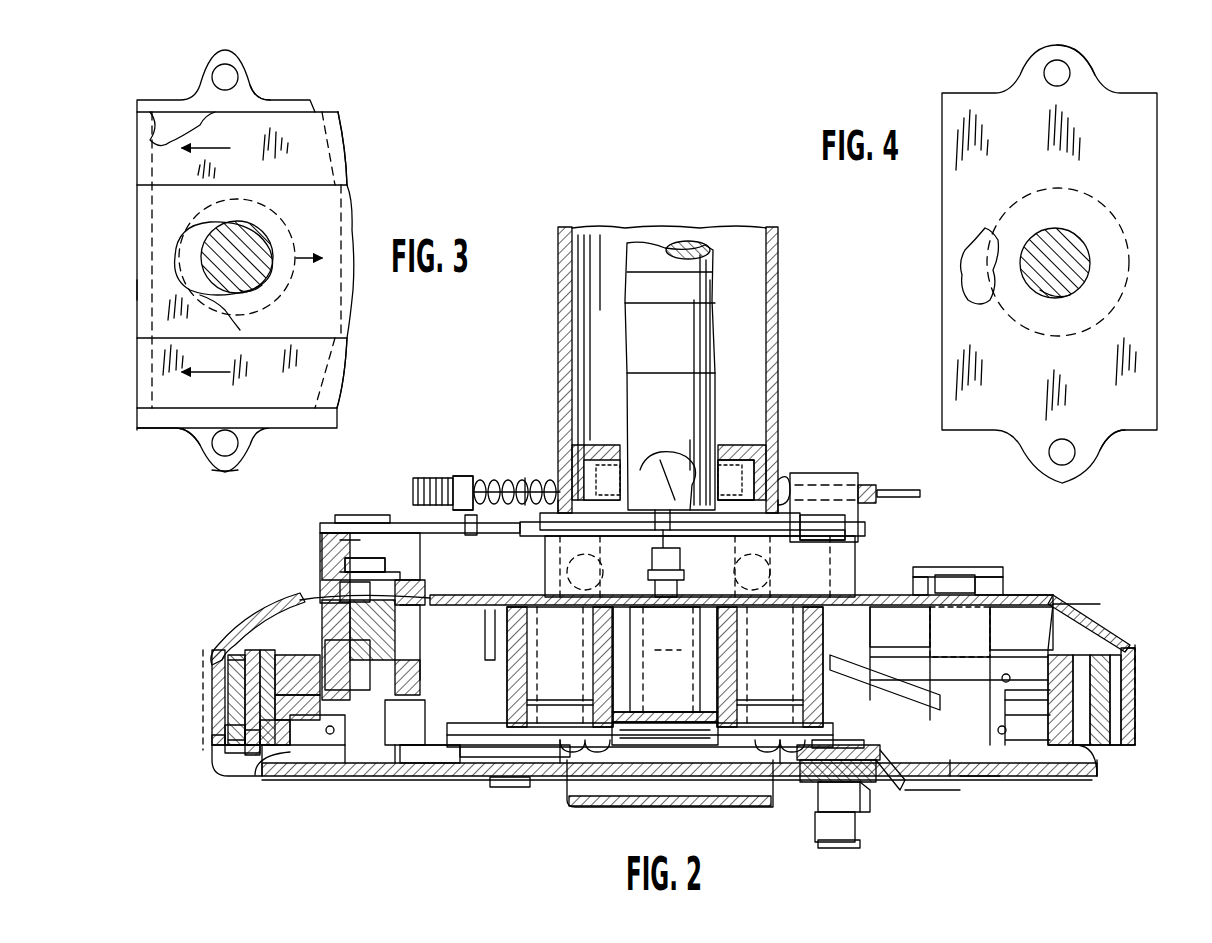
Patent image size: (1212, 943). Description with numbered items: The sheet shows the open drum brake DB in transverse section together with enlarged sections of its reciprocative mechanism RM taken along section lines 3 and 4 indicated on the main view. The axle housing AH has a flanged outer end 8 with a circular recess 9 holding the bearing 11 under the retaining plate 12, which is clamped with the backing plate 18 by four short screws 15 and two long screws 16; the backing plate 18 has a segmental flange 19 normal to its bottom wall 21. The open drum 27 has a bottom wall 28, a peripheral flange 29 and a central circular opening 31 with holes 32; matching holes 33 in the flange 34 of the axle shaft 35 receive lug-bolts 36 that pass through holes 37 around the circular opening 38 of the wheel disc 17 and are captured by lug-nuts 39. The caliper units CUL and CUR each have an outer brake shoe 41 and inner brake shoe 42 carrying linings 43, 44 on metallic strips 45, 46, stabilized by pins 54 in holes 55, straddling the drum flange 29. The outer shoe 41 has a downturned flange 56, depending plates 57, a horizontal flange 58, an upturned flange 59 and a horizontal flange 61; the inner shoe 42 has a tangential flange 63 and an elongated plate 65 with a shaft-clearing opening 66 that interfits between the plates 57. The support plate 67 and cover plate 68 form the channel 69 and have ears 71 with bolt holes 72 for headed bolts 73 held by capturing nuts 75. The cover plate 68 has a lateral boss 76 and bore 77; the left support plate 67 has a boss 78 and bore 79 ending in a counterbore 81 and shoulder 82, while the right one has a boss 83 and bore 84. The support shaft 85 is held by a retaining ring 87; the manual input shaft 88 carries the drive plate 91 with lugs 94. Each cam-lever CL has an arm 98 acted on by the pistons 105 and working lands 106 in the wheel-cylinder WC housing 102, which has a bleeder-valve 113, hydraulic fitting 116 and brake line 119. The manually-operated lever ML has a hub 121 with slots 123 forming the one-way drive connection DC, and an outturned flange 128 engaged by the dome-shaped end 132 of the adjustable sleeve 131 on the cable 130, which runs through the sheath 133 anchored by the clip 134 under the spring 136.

In FIG. 2, the direction of movement 3 is at (270, 670).
In FIG. 2, the direction of movement 4 is at (285, 640).
In FIG. 2, the flanged outer end 8 is at (855, 545).
In FIG. 2, the circular recess 9 is at (805, 560).
In FIG. 2, the bearing 11 is at (545, 528).
In FIG. 2, the retaining plate 12 is at (825, 610).
In FIG. 2, the short screws 15 is at (845, 540).
In FIG. 2, the long screws 16 is at (580, 745).
In FIG. 2, the wheel disc 17 is at (870, 800).
In FIG. 2, the backing plate 18 is at (1040, 595).
In FIG. 2, the segmental flange 19 is at (1137, 655).
In FIG. 2, the bottom wall 21 is at (1050, 590).
In FIG. 2, the open drum 27 is at (312, 780).
In FIG. 2, the bottom wall 28 is at (345, 780).
In FIG. 2, the peripheral flange 29 is at (245, 745).
In FIG. 2, the central circular opening 31 is at (585, 790).
In FIG. 2, the holes 32 is at (818, 808).
In FIG. 2, the holes 33 is at (800, 800).
In FIG. 2, the flange 34 is at (525, 765).
In FIG. 2, the axle shaft 35 is at (640, 243).
In FIG. 2, the lug-bolts 36 is at (520, 790).
In FIG. 2, the holes 37 is at (860, 822).
In FIG. 2, the circular opening 38 is at (920, 782).
In FIG. 2, the lug-nuts 39 is at (820, 842).
In FIG. 2, the outer brake shoe 41 is at (210, 697).
In FIG. 2, the inner brake shoe 42 is at (332, 790).
In FIG. 2, the lining 43 is at (250, 752).
In FIG. 2, the lining 44 is at (210, 650).
In FIG. 2, the metallic strip 45 is at (230, 745).
In FIG. 2, the metallic strip 46 is at (290, 755).
In FIG. 2, the stabilizing pins 54 is at (215, 745).
In FIG. 2, the holes 55 is at (205, 738).
In FIG. 2, the downturned flange 56 is at (230, 650).
In FIG. 3, the depending plates 57 is at (340, 145).
In FIG. 3, the horizontal flange 58 is at (137, 378).
In FIG. 2, the upturned flange 59 is at (425, 775).
In FIG. 2, the horizontal flange 61 is at (400, 780).
In FIG. 2, the tangentially-oriented flange 63 is at (335, 715).
In FIG. 3, the elongated plate 65 is at (338, 225).
In FIG. 3, the shaft-clearing opening 66 is at (230, 315).
In FIG. 4, the support plate 67 is at (1148, 158).
In FIG. 3, the cover plate 68 is at (160, 450).
In FIG. 3, the channel 69 is at (150, 138).
In FIG. 3, the ears 71 is at (258, 75).
In FIG. 3, the bolt holes 72 is at (215, 80).
In FIG. 2, the headed bolts 73 is at (975, 776).
In FIG. 2, the capturing nuts 75 is at (975, 585).
In FIG. 3, the lateral boss 76 is at (185, 218).
In FIG. 3, the bore 77 is at (262, 237).
In FIG. 4, the lateral boss 78 is at (967, 305).
In FIG. 4, the bore 79 is at (1040, 300).
In FIG. 2, the counterbore 81 is at (345, 530).
In FIG. 2, the annular shoulder 82 is at (340, 590).
In FIG. 2, the lateral boss 83 is at (922, 595).
In FIG. 2, the bore 84 is at (1010, 620).
In FIG. 2, the support shaft 85 is at (955, 575).
In FIG. 2, the retaining ring 87 is at (930, 570).
In FIG. 3, the manual input shaft 88 is at (258, 285).
In FIG. 2, the drive plate 91 is at (405, 585).
In FIG. 2, the lugs 94 is at (345, 588).
In FIG. 2, the arm 98 is at (490, 640).
In FIG. 2, the wheel-cylinder housing 102 is at (615, 740).
In FIG. 2, the pistons 105 is at (535, 686).
In FIG. 2, the working land 106 is at (520, 660).
In FIG. 2, the bleeder-valve 113 is at (740, 470).
In FIG. 2, the hydraulic fitting 116 is at (693, 468).
In FIG. 2, the brake line 119 is at (680, 495).
In FIG. 2, the hub 121 is at (345, 540).
In FIG. 2, the slots 123 is at (360, 558).
In FIG. 2, the outturned flange 128 is at (468, 476).
In FIG. 2, the cable 130 is at (500, 478).
In FIG. 2, the adjustable sleeve 131 is at (470, 490).
In FIG. 2, the dome-shaped end 132 is at (425, 478).
In FIG. 2, the sheath 133 is at (865, 485).
In FIG. 2, the clip 134 is at (850, 470).
In FIG. 2, the spring 136 is at (530, 478).
In FIG. 2, the axle housing AH is at (578, 222).
In FIG. 3, the reciprocative mechanism RM is at (128, 290).
In FIG. 2, the one-way drive connection DC is at (371, 556).
In FIG. 2, the manually-operated lever ML is at (480, 535).
In FIG. 2, the wheel-cylinder WC is at (696, 640).
In FIG. 2, the cam-lever CL is at (363, 778).
In FIG. 2, the left caliper unit CUL is at (198, 680).
In FIG. 2, the right caliper unit CUR is at (1112, 778).
In FIG. 2, the open drum brake DB is at (965, 800).